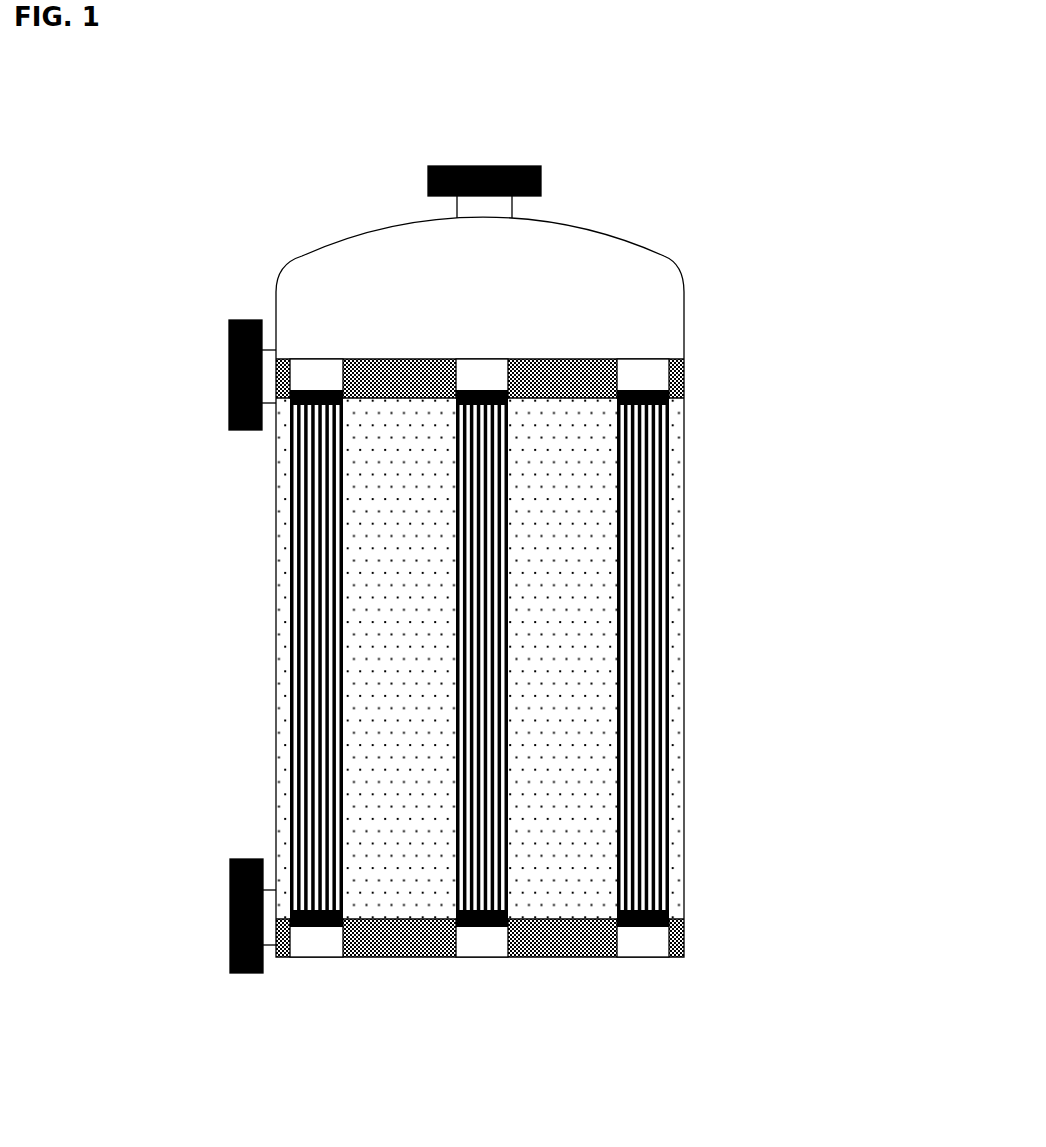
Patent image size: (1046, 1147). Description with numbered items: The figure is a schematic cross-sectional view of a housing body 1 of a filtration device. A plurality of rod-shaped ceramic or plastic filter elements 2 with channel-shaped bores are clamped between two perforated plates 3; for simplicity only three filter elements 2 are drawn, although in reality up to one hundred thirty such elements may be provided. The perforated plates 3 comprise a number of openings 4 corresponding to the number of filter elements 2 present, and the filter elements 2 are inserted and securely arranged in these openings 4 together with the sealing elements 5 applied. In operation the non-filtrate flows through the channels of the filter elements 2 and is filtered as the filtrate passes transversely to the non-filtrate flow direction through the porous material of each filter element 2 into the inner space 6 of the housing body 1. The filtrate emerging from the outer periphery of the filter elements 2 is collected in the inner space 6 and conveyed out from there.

The housing body 1 is at (819, 230).
The filter element 2 is at (640, 673).
The perforated plate 3 is at (565, 942).
The opening 4 is at (648, 368).
The sealing element 5 is at (647, 390).
The inner space 6 is at (547, 785).